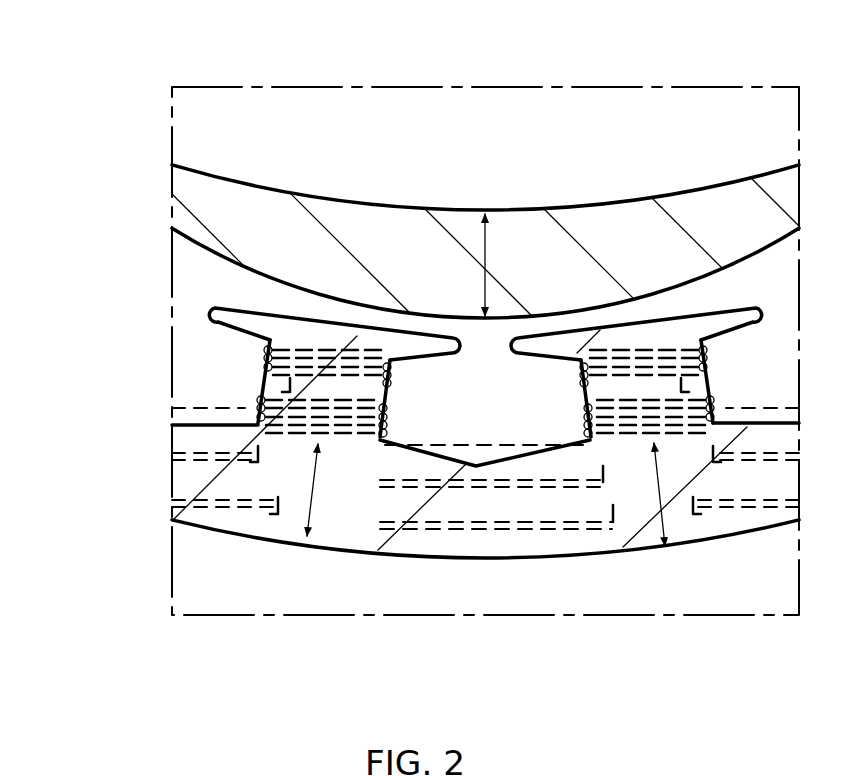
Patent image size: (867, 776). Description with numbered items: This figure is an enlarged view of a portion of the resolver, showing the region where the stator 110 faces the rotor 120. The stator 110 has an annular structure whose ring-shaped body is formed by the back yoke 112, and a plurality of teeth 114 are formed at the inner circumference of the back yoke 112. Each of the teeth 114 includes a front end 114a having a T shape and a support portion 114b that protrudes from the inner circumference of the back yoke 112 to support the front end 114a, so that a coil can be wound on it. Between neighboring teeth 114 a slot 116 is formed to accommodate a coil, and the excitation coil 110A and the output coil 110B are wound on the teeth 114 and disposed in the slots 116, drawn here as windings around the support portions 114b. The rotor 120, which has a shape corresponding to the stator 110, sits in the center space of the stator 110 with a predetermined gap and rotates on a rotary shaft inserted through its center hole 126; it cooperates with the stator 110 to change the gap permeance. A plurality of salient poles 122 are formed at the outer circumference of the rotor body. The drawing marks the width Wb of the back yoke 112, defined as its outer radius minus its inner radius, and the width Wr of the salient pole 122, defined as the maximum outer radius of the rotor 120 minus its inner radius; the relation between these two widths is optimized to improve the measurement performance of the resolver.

The stator 110 is at (157, 469).
The excitation coil 110A is at (390, 432).
The output coil 110B is at (387, 387).
The back yoke 112 is at (243, 517).
The teeth 114 is at (334, 437).
The front end 114a is at (214, 316).
The support portion 114b is at (263, 378).
The slot 116 is at (478, 437).
The rotor 120 is at (157, 191).
The salient poles 122 is at (466, 237).
The center hole 126 is at (357, 130).